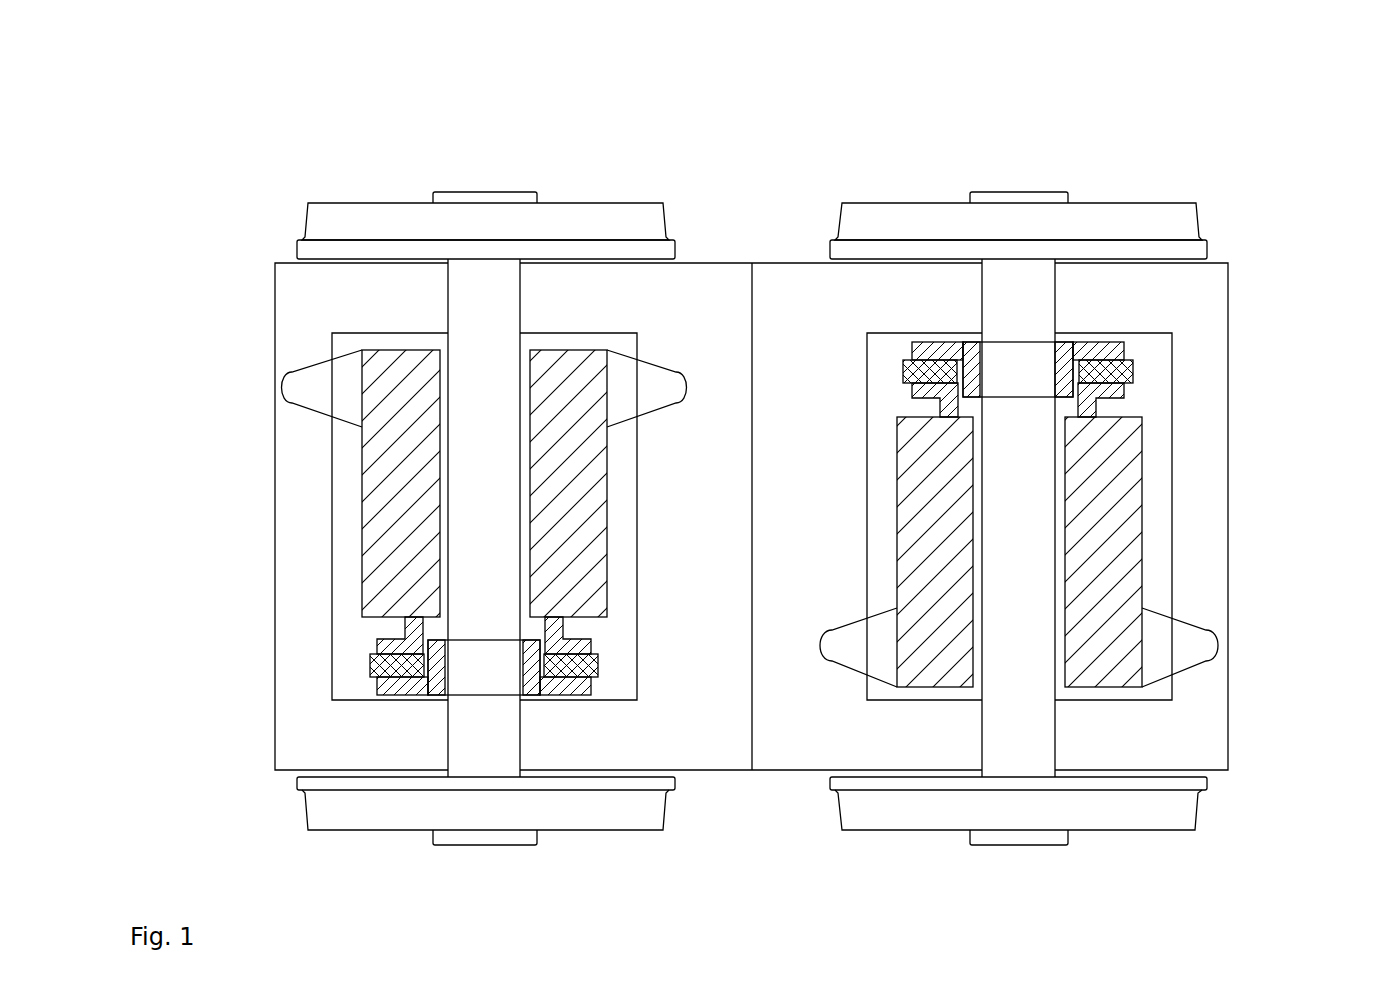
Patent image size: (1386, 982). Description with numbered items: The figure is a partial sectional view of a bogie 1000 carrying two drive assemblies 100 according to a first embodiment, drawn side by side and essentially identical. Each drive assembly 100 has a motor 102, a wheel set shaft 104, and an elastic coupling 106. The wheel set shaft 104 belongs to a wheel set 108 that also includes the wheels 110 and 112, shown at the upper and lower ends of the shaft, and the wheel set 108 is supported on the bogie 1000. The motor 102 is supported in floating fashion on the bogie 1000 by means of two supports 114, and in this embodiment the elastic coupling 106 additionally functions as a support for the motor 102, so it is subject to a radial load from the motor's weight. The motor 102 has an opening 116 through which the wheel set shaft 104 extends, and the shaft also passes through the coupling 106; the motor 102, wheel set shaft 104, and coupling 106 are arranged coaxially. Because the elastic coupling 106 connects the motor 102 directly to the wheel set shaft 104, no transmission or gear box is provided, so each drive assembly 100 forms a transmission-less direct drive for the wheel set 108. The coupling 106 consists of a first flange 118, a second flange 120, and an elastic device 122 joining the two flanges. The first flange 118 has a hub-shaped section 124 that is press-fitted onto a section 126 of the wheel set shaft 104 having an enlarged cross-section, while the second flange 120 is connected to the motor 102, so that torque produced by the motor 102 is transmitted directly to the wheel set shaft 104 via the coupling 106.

The bogie 1000 is at (752, 489).
The drive assembly 100 is at (752, 494).
The motor 102 is at (754, 499).
The wheel set shaft 104 is at (756, 518).
The elastic coupling 106 is at (751, 499).
The wheel set 108 is at (758, 118).
The wheel 110 is at (759, 168).
The wheel 112 is at (752, 863).
The support 114 is at (754, 508).
The opening 116 is at (757, 518).
The first flange 118 is at (752, 512).
The second flange 120 is at (763, 518).
The elastic device 122 is at (749, 522).
The hub-shaped section 124 is at (743, 513).
The section with an enlarged cross-section 126 is at (750, 492).